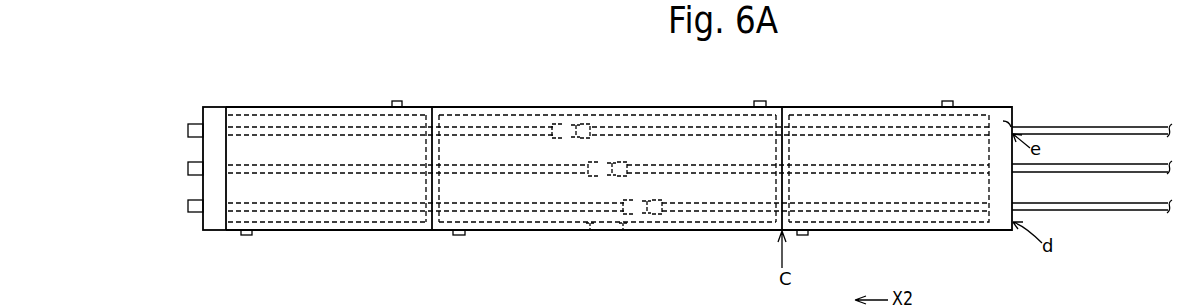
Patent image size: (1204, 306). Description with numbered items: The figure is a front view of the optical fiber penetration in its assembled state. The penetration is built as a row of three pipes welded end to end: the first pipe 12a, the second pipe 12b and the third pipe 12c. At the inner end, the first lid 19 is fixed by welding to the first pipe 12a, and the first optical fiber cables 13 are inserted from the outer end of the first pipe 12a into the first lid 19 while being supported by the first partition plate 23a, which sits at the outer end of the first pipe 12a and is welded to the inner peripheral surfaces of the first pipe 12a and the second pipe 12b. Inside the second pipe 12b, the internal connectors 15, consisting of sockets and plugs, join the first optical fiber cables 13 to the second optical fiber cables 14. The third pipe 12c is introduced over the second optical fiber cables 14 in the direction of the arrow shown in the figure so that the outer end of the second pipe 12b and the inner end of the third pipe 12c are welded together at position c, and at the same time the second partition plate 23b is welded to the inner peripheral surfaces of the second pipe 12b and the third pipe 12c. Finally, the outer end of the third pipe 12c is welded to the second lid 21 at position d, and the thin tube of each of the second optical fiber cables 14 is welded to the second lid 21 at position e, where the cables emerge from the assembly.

The first lid 19 is at (213, 110).
The first pipe 12a is at (287, 107).
The second pipe 12b is at (622, 107).
The third pipe 12c is at (859, 107).
The first partition plate 23a is at (441, 117).
The second partition plate 23b is at (797, 117).
The first optical fiber cables 13 is at (495, 128).
The second optical fiber cables 14 is at (722, 127).
The internal connectors 15 is at (575, 124).
The second lid 21 is at (1005, 122).